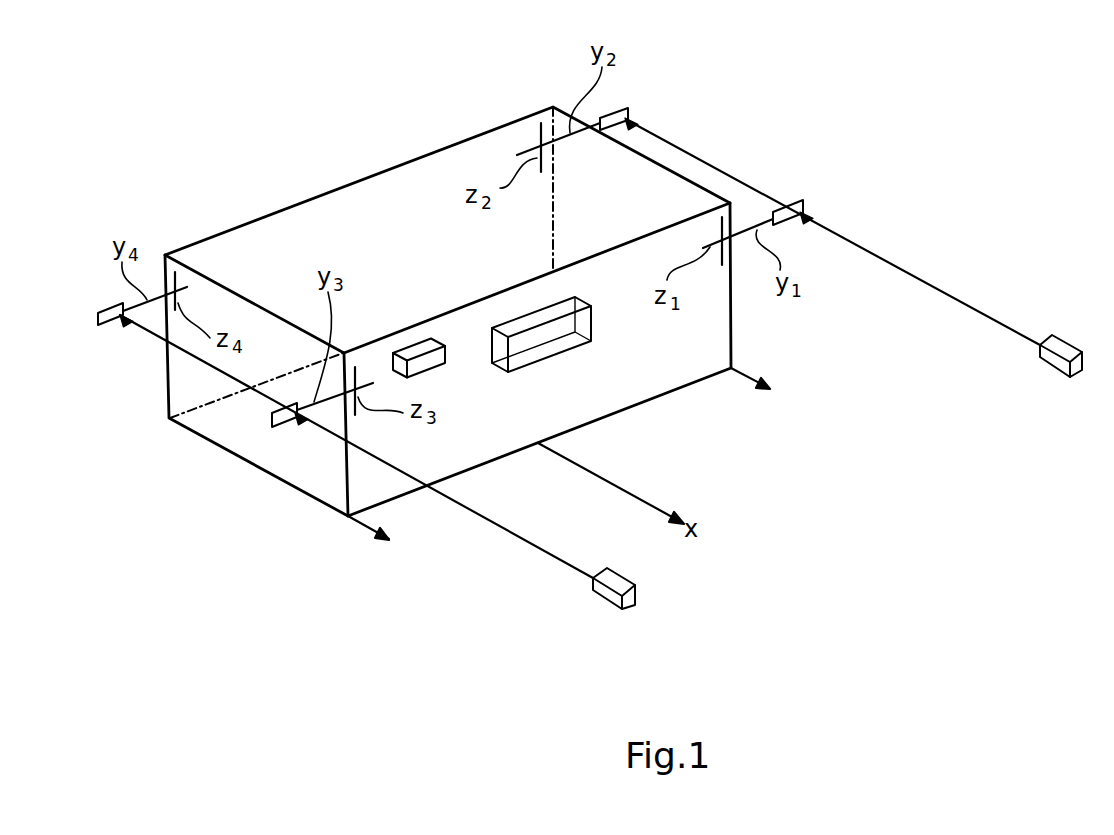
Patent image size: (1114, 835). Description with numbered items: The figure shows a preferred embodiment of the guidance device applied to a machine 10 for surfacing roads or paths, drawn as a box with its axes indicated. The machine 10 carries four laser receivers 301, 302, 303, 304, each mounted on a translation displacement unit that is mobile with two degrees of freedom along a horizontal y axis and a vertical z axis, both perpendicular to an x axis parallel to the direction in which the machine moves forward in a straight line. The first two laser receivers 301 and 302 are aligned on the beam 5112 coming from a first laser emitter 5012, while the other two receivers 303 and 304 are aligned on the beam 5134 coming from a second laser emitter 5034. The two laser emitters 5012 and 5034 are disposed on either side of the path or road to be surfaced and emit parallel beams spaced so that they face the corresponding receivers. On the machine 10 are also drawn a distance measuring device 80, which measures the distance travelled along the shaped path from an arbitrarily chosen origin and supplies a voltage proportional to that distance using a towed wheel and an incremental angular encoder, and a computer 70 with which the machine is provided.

The machine 10 is at (343, 161).
The laser receiver 301 is at (803, 203).
The laser receiver 302 is at (627, 108).
The laser receiver 303 is at (272, 421).
The laser receiver 304 is at (105, 327).
The first laser emitter 5012 is at (1045, 367).
The second laser emitter 5034 is at (608, 605).
The beam 5112 is at (923, 281).
The beam 5134 is at (507, 535).
The computer 70 is at (573, 362).
The distance measuring device 80 is at (438, 337).